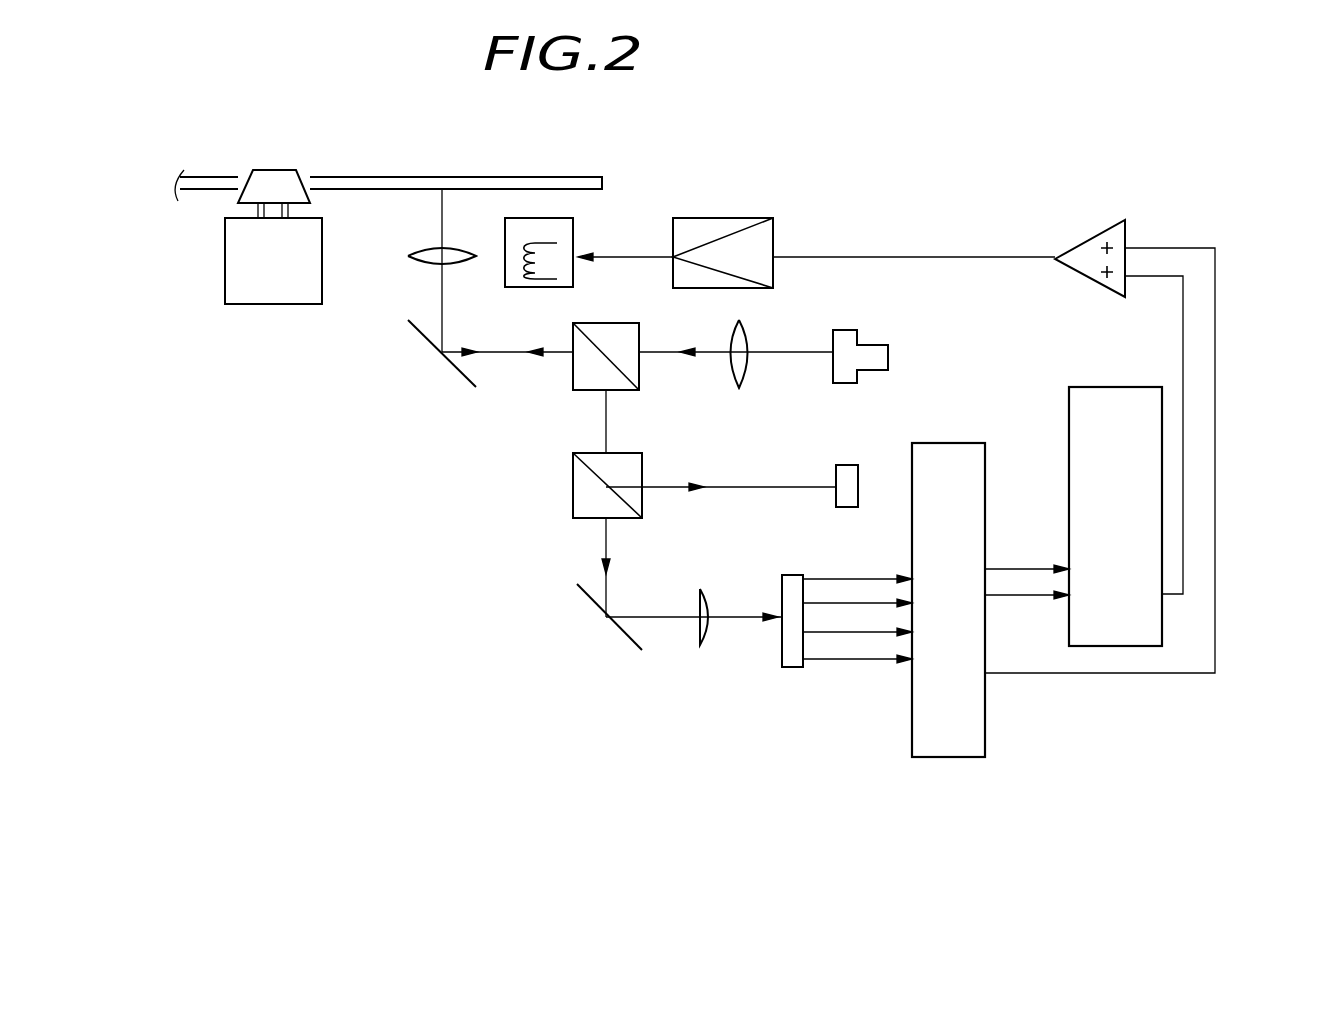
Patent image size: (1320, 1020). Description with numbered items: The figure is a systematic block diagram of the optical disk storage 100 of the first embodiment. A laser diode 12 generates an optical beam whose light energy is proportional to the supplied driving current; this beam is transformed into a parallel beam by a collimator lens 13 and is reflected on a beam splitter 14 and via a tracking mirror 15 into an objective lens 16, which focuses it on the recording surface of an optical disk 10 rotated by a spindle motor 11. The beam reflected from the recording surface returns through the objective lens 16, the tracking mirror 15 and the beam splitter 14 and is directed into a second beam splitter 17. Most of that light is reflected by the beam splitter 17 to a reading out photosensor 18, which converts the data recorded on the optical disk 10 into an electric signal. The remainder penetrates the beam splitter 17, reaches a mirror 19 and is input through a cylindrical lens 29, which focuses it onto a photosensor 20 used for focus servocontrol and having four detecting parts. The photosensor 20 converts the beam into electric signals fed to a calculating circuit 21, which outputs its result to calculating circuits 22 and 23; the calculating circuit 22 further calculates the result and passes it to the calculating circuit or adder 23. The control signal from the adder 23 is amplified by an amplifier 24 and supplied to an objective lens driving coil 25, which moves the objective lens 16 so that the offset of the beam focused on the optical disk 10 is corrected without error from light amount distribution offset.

The optical disk storage 100 is at (682, 101).
The optical disk 10 is at (492, 176).
The spindle motor 11 is at (322, 263).
The laser diode 12 is at (878, 345).
The collimator lens 13 is at (752, 343).
The beam splitter 14 is at (588, 323).
The tracking mirror 15 is at (432, 338).
The objective lens 16 is at (460, 248).
The beam splitter 17 is at (637, 453).
The reading out photosensor 18 is at (848, 465).
The mirror 19 is at (590, 600).
The photosensor for focus servocontrol 20 is at (782, 642).
The calculating circuit 21 is at (923, 440).
The calculating circuit 22 is at (1092, 387).
The calculating circuit or adder 23 is at (1080, 243).
The amplifier 24 is at (773, 243).
The objective lens driving coil 25 is at (573, 238).
The cylindrical lens 29 is at (700, 607).